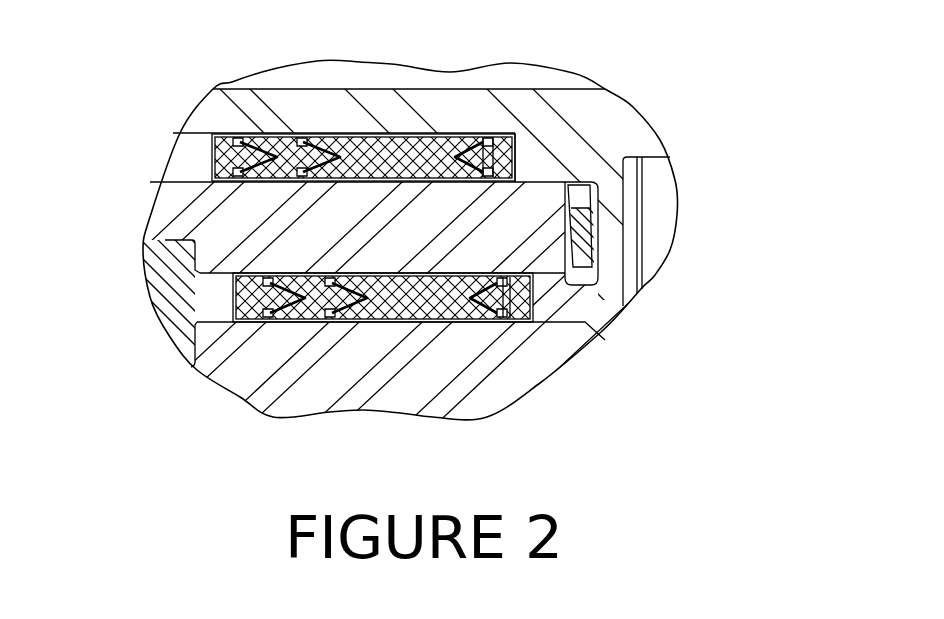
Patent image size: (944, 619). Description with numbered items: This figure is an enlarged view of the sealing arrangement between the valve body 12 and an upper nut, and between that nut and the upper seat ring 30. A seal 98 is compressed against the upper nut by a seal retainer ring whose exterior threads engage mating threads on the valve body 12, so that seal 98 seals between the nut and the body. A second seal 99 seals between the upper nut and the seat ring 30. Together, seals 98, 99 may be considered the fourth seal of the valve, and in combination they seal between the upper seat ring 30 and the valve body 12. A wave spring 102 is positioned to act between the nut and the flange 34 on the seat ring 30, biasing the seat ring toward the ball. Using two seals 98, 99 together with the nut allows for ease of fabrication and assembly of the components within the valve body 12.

The valve body 12 is at (520, 367).
The seat ring 30 is at (613, 115).
The flange 34 is at (608, 263).
The seal 98 is at (223, 89).
The seal 99 is at (330, 323).
The wave spring 102 is at (588, 235).